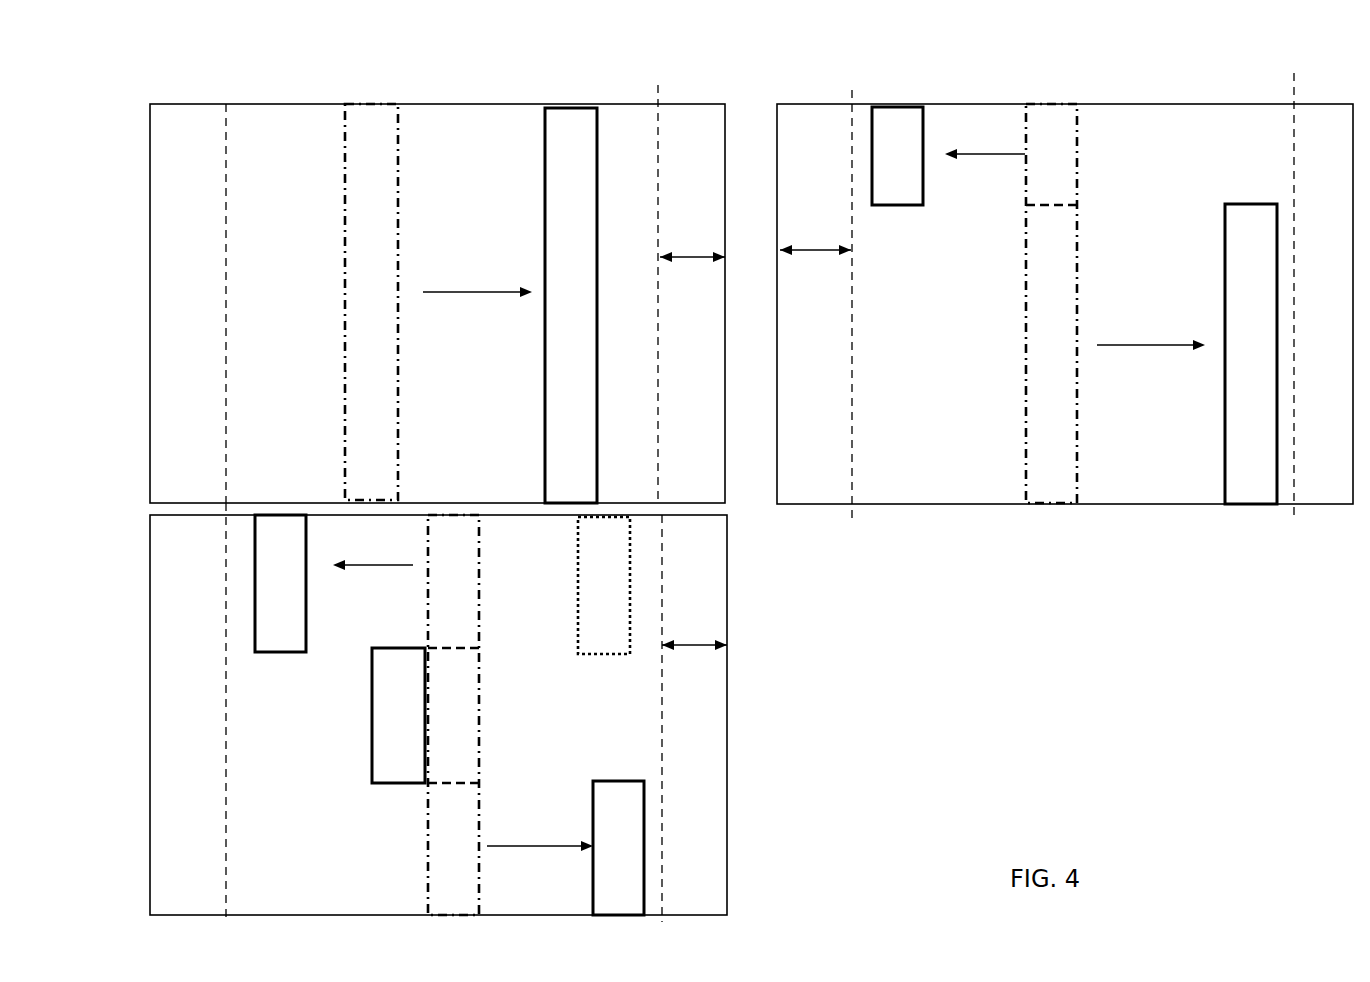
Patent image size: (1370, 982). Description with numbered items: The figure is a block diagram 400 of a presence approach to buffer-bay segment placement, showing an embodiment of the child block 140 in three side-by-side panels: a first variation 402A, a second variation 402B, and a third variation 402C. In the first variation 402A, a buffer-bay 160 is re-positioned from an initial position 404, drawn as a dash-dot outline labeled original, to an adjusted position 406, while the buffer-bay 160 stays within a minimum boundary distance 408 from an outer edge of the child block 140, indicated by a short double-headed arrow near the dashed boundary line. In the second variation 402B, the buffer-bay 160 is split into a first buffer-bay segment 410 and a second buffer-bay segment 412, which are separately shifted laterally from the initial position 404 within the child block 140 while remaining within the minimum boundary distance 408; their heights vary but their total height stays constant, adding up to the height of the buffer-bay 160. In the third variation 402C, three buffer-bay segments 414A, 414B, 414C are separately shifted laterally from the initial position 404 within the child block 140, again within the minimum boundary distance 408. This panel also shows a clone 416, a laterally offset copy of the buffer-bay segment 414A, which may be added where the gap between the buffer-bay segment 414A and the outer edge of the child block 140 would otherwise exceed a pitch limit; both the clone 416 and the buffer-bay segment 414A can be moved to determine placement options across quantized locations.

The block diagram 400 is at (214, 46).
The first variation 402A is at (291, 104).
The second variation 402B is at (1193, 104).
The third variation 402C is at (728, 792).
The initial position 404 is at (386, 104).
The adjusted position 406 is at (546, 343).
The minimum boundary distance 408 is at (698, 233).
The first buffer-bay segment 410 is at (898, 107).
The second buffer-bay segment 412 is at (1242, 506).
The buffer-bay segment 414A is at (258, 652).
The buffer-bay segment 414B is at (372, 724).
The buffer-bay segment 414C is at (593, 793).
The clone 416 is at (578, 600).
The child block 140 is at (500, 104).
The buffer-bay 160 is at (592, 108).